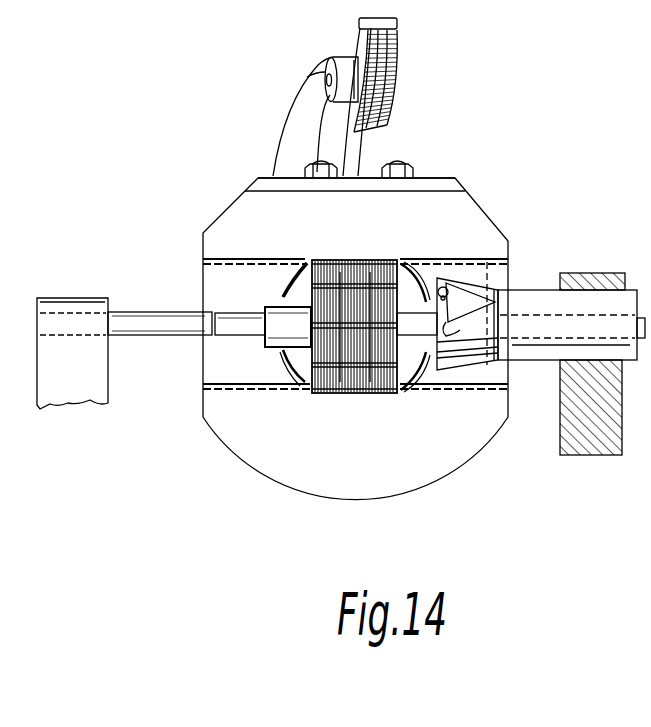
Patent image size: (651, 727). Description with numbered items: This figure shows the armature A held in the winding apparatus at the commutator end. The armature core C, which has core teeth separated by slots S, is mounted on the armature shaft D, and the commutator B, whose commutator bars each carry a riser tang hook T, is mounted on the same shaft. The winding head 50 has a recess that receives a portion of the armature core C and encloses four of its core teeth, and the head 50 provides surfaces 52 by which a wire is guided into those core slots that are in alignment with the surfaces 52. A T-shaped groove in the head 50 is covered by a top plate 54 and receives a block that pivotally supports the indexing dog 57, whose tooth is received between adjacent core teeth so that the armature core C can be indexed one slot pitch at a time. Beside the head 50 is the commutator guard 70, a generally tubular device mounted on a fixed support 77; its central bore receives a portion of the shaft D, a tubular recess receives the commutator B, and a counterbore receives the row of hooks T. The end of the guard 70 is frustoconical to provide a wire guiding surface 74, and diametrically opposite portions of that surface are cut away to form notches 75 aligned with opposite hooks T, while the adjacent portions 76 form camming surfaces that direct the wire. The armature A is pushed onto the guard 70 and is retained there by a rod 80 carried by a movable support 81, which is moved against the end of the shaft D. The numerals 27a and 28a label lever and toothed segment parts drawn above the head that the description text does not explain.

The winding head 50 is at (278, 476).
The surfaces 52 is at (252, 214).
The top plate 54 is at (258, 188).
The lever arm 27a is at (288, 110).
The toothed segment 28a is at (396, 66).
The rod 80 is at (146, 312).
The movable support 81 is at (37, 306).
The shaft D is at (236, 313).
The armature A is at (328, 262).
The indexing dog 57 is at (358, 262).
The armature core C is at (381, 262).
The slots S is at (296, 364).
The wire guiding surface 74 is at (462, 372).
The notches 75 is at (466, 302).
The portions 76 is at (460, 335).
The riser tang hook T is at (444, 285).
The commutator B is at (488, 262).
The commutator guard 70 is at (548, 276).
The fixed support 77 is at (590, 273).